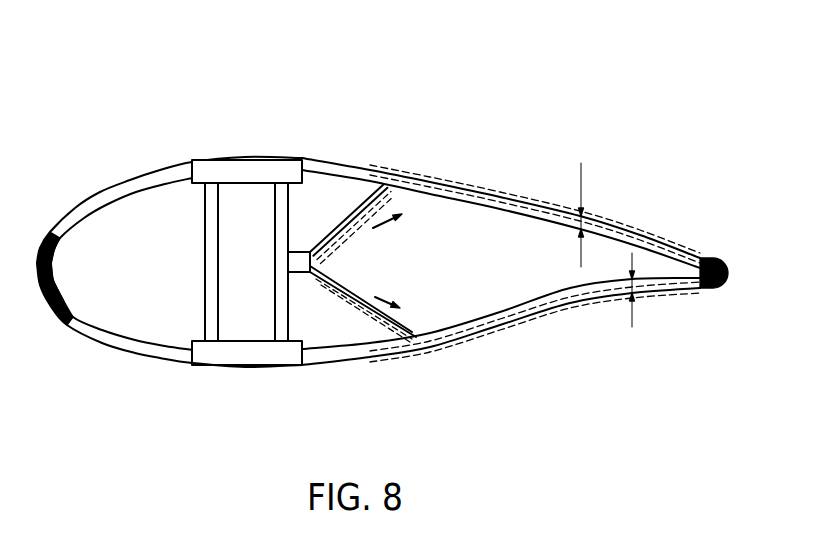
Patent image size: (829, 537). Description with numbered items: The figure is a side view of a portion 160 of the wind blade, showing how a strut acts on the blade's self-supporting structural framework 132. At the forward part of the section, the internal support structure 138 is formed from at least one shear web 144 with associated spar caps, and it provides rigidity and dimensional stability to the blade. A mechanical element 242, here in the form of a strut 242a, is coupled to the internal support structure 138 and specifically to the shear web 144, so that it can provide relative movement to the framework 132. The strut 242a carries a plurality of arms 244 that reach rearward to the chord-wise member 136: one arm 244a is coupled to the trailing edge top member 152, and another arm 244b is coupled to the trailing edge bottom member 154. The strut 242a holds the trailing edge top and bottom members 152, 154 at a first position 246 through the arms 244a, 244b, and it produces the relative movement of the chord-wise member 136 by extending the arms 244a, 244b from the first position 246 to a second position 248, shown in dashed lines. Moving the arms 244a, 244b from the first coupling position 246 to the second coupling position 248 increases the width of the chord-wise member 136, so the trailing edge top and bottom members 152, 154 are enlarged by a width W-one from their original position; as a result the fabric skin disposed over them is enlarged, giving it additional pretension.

The portion of the wind blade 160 is at (657, 75).
The self-supporting structural framework 132 is at (476, 171).
The chord-wise member 136 is at (534, 340).
The internal support structure 138 is at (237, 378).
The shear web 144 is at (273, 263).
The trailing edge top member 152 is at (447, 196).
The trailing edge bottom member 154 is at (512, 300).
The mechanical element 242 is at (305, 235).
The strut 242a is at (298, 276).
The arms 244 is at (384, 180).
The arm 244a is at (362, 212).
The arm 244b is at (360, 309).
The first position 246 is at (428, 187).
The second position 248 is at (437, 178).